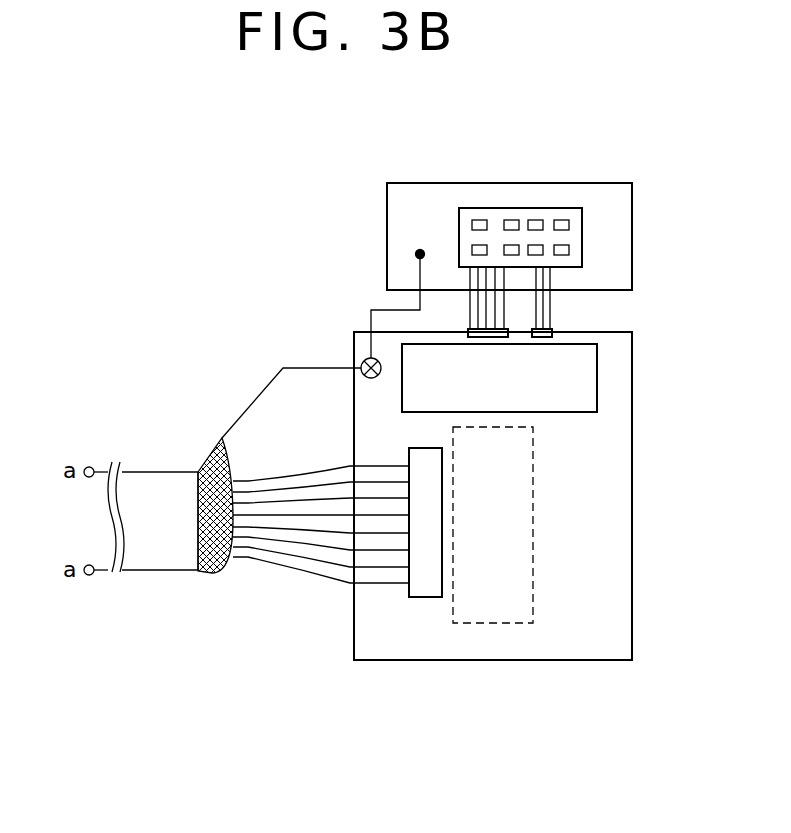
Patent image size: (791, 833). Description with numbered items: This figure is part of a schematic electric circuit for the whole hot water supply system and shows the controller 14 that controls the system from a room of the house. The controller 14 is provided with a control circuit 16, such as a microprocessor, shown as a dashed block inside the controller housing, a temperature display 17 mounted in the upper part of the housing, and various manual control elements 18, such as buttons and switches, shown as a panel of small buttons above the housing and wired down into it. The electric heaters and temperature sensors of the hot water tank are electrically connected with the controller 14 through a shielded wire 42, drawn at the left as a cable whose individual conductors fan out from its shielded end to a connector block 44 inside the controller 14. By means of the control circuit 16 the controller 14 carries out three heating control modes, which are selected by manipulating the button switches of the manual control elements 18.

The controller 14 is at (563, 446).
The control circuit 16 is at (513, 623).
The temperature display 17 is at (598, 359).
The manual control elements 18 is at (550, 207).
The shielded wire 42 is at (163, 572).
The connector 44 is at (428, 597).